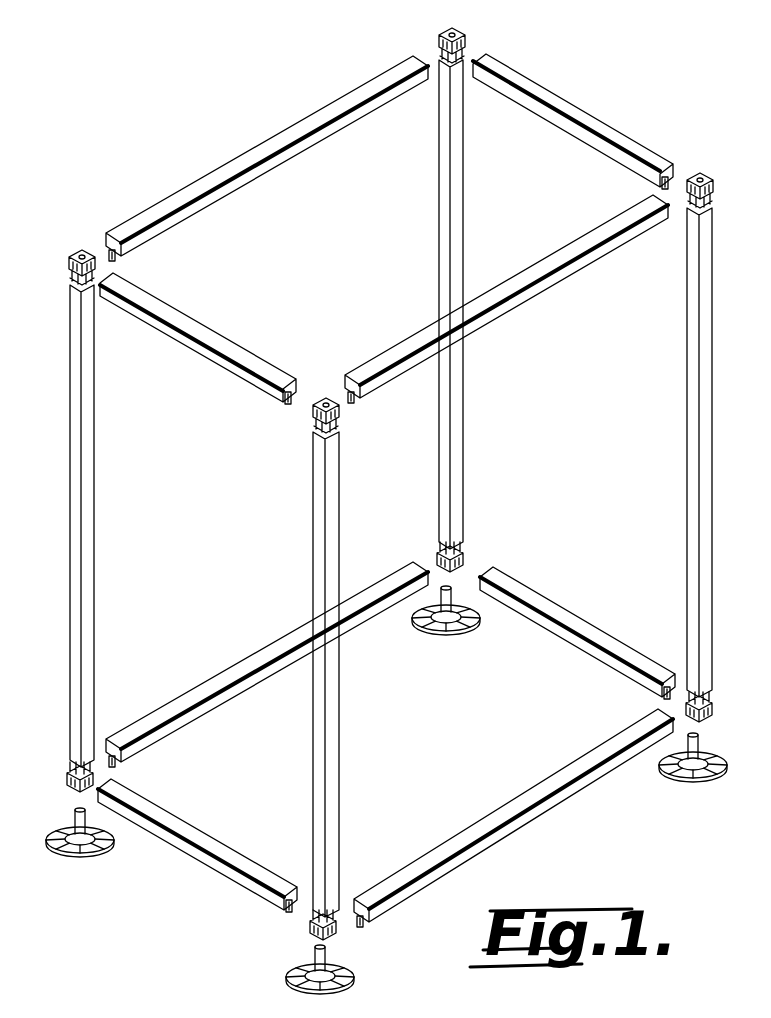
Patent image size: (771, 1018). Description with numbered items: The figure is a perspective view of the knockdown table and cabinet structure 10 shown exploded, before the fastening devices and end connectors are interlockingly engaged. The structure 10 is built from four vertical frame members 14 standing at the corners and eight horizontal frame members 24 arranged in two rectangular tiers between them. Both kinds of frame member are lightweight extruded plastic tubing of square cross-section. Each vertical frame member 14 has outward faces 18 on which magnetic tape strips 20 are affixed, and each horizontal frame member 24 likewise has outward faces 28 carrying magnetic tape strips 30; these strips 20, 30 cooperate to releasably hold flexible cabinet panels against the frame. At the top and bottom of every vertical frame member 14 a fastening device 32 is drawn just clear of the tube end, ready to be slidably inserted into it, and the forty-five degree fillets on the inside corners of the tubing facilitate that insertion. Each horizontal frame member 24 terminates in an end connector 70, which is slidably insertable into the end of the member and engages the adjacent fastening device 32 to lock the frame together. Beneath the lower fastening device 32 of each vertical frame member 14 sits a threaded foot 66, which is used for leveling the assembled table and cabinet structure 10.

The knockdown table and cabinet structure 10 is at (237, 140).
The vertical frame member 14 is at (387, 488).
The outward face 18 is at (387, 488).
The magnetic tape strip 20 is at (106, 242).
The horizontal frame member 24 is at (400, 507).
The outward face 28 is at (400, 507).
The magnetic tape strip 30 is at (400, 507).
The fastening device 32 is at (464, 32).
The threaded foot 66 is at (447, 634).
The end connector 70 is at (672, 174).